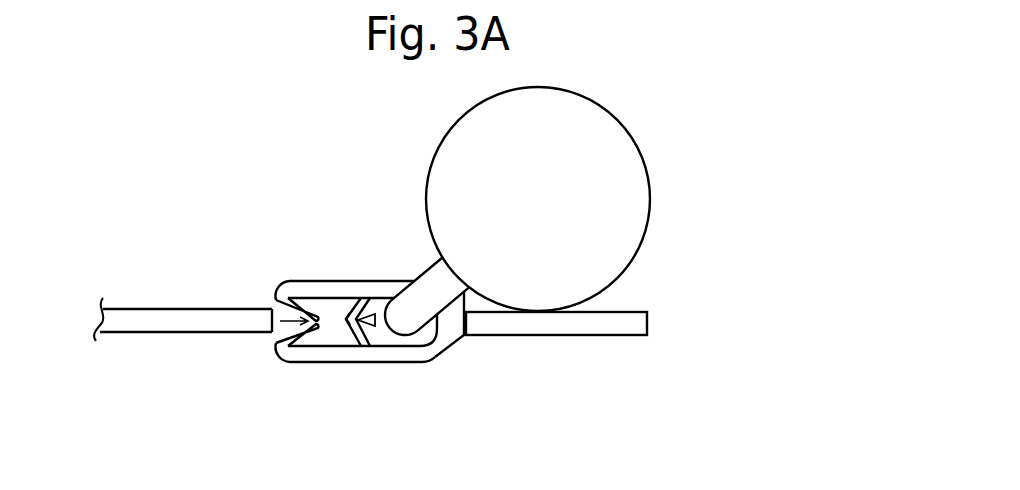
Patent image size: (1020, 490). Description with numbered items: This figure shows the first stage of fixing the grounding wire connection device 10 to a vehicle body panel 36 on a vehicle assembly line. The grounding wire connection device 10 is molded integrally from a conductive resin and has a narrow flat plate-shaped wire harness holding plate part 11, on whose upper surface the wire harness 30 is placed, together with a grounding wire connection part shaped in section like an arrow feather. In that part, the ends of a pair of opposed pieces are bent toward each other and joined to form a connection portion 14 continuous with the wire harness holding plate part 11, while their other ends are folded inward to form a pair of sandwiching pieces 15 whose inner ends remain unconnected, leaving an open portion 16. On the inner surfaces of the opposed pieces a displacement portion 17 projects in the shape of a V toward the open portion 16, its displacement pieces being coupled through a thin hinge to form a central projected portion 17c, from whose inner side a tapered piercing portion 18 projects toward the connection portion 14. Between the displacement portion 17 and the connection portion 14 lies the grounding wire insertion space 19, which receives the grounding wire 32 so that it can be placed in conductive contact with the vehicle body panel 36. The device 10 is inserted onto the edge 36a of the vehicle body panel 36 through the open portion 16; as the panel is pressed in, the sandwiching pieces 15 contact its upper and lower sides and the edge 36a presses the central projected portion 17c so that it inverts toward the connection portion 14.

The grounding wire connection device 10 is at (357, 267).
The wire harness holding plate part 11 is at (603, 336).
The connection portion 14 is at (470, 333).
The sandwiching pieces 15 is at (304, 298).
The open portion 16 is at (273, 300).
The displacement portion 17 is at (349, 310).
The central projected portion 17c is at (347, 320).
The tapered piercing portion 18 is at (377, 327).
The grounding wire insertion space 19 is at (415, 337).
The wire harness 30 is at (637, 136).
The grounding wire 32 is at (420, 282).
The vehicle body panel 36 is at (184, 353).
The edge of the vehicle body panel 36a is at (273, 333).